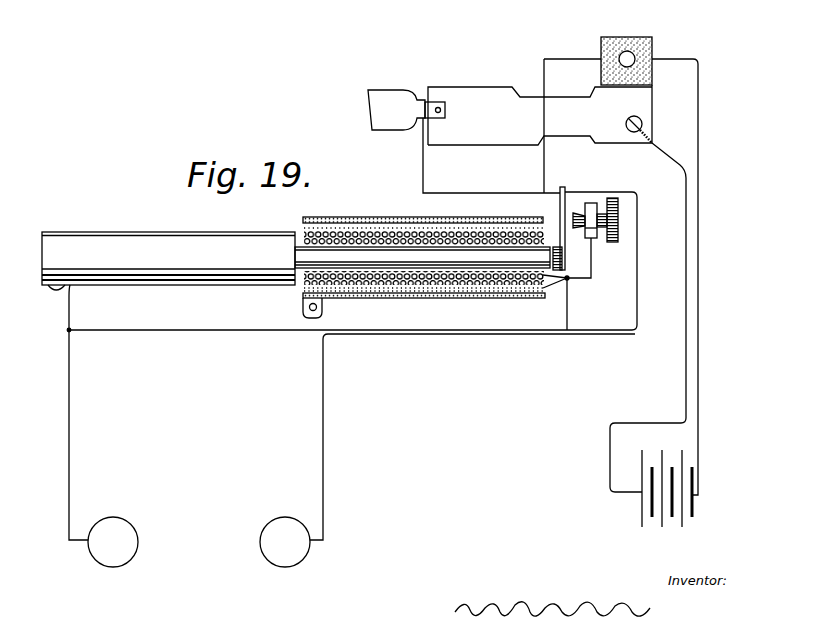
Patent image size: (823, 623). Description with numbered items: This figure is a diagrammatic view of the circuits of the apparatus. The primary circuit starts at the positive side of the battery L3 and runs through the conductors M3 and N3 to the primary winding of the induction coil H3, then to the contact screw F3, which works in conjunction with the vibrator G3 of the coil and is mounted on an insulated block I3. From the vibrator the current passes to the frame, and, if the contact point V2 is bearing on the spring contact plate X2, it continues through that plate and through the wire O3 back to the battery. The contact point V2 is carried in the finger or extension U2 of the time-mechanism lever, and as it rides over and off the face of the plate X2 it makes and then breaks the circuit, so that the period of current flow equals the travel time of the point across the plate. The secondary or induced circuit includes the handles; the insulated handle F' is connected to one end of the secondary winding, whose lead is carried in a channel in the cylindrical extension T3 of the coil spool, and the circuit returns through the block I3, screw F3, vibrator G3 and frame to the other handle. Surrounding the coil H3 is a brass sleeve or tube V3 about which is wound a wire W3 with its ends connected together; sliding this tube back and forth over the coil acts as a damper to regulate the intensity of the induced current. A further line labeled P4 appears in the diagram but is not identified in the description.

The cylindrical extension of the coil spool T3 is at (168, 264).
The induction coil H3 is at (302, 228).
The metallic sleeve or tube V3 is at (302, 293).
The wire W3 is at (397, 292).
The conductor P4 is at (218, 332).
The handle F' is at (199, 523).
The finger or extension U2 is at (393, 122).
The contact point or stud V2 is at (439, 108).
The spring plate X2 is at (537, 126).
The conductor N3 is at (559, 60).
The contact screw F3 is at (600, 212).
The vibrator G3 is at (565, 246).
The block I3 is at (601, 240).
The conductor M3 is at (700, 265).
The wire O3 is at (608, 333).
The battery L3 is at (696, 496).